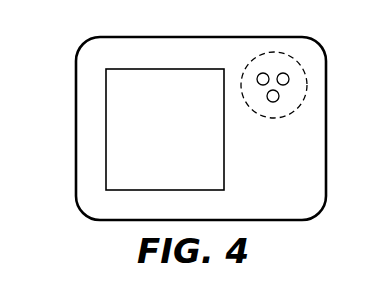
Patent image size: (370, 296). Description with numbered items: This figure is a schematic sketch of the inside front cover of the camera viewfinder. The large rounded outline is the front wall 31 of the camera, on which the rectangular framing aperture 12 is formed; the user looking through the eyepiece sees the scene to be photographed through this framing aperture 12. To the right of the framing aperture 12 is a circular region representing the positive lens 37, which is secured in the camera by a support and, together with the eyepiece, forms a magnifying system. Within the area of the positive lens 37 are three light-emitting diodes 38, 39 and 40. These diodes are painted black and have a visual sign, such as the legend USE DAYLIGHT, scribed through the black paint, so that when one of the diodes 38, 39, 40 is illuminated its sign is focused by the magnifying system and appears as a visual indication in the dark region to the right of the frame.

The framing aperture 12 is at (183, 70).
The front wall 31 is at (88, 136).
The positive lens 37 is at (295, 112).
The light-emitting diode 38 is at (263, 73).
The light-emitting diode 39 is at (285, 73).
The light-emitting diode 40 is at (272, 102).